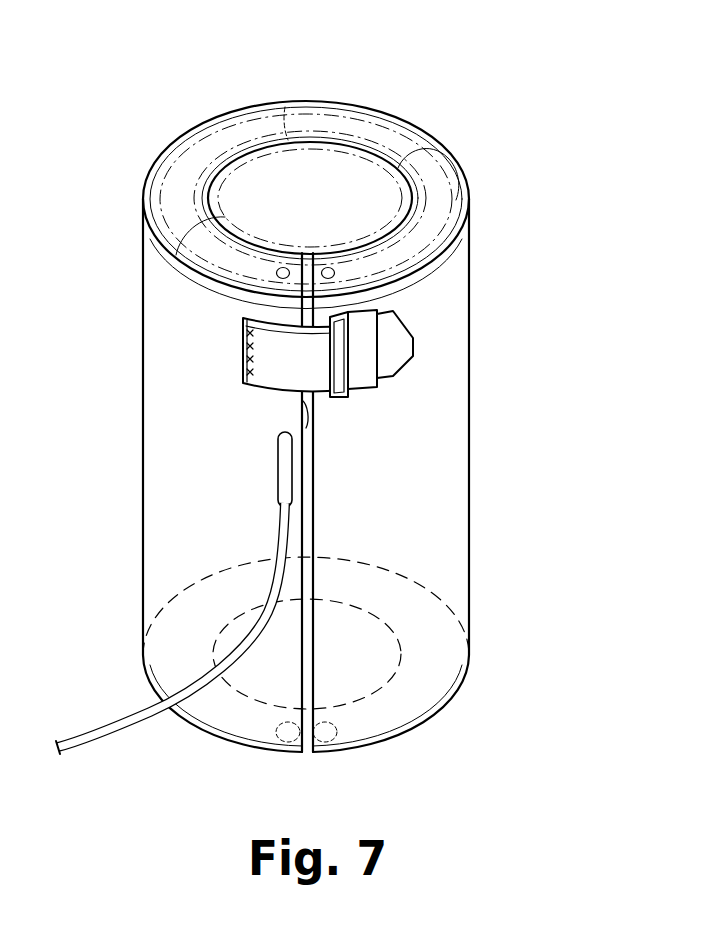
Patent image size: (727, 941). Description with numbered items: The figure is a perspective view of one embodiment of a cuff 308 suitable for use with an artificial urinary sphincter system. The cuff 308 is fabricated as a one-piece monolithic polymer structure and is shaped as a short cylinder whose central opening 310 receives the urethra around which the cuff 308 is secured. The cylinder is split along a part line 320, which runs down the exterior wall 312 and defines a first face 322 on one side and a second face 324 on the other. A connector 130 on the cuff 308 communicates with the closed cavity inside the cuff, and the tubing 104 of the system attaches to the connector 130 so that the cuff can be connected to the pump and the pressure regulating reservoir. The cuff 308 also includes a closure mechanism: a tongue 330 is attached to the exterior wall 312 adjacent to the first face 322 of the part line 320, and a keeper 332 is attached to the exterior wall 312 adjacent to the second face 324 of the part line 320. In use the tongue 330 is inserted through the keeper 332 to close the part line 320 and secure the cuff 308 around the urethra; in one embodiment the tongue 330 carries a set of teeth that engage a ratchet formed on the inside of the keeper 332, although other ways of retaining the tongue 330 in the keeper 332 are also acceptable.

The cuff 308 is at (422, 100).
The central bore opening 310 is at (263, 177).
The exterior wall 312 is at (455, 308).
The part line 320 is at (317, 483).
The first face 322 is at (303, 398).
The second face 324 is at (307, 427).
The tongue 330 is at (403, 338).
The keeper 332 is at (403, 363).
The connector 130 is at (283, 475).
The tubing 104 is at (122, 723).